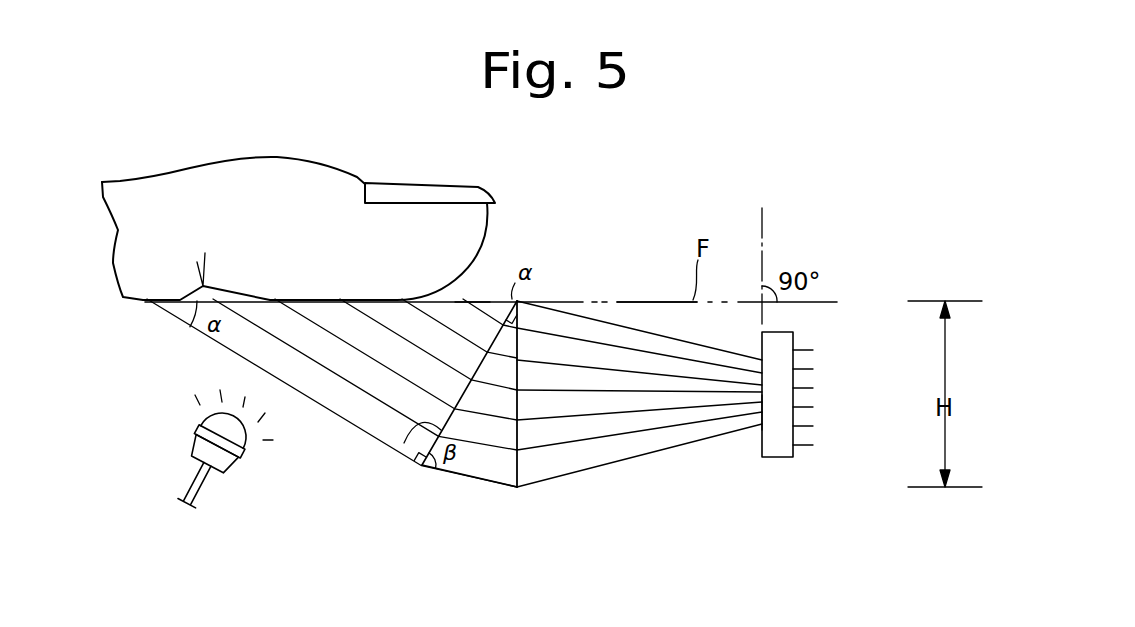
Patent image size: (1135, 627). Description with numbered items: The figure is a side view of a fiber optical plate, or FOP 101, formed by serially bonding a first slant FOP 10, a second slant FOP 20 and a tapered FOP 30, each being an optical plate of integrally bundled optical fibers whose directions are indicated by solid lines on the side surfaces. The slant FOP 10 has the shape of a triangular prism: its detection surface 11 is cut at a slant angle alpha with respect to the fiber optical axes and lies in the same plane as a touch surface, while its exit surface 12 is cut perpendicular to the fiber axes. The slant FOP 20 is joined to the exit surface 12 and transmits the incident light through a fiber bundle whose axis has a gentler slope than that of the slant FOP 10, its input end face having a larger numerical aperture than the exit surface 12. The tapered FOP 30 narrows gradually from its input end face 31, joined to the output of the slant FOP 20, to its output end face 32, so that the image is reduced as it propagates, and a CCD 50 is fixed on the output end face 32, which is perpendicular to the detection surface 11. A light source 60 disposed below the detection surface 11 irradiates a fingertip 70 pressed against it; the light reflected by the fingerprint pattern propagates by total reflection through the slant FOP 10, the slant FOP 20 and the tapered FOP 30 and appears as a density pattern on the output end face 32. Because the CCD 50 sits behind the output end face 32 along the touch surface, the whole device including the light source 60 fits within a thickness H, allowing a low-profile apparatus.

The fingertip 70 is at (362, 190).
The detection surface 11 is at (478, 296).
The fiber optical plate (FOP) 101 is at (627, 253).
The slant FOP 10 is at (353, 412).
The exit surface 12 is at (411, 456).
The slant FOP 20 is at (482, 474).
The input end face 31 is at (519, 466).
The tapered FOP 30 is at (635, 452).
The output end face 32 is at (757, 425).
The CCD 50 is at (783, 453).
The light source 60 is at (180, 447).